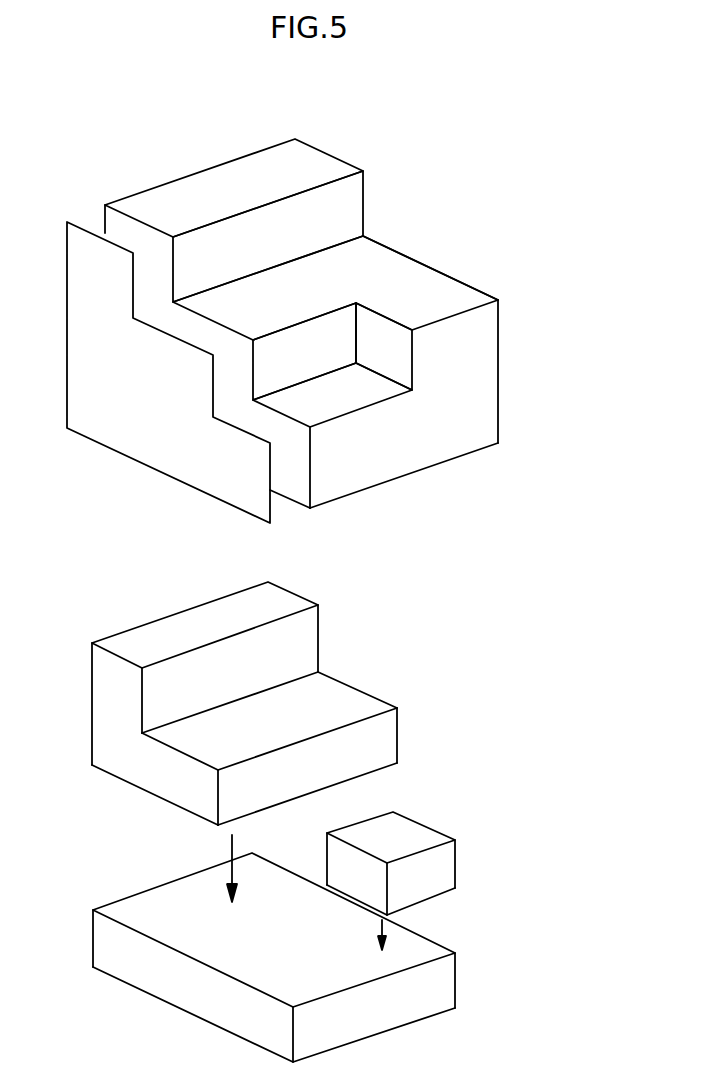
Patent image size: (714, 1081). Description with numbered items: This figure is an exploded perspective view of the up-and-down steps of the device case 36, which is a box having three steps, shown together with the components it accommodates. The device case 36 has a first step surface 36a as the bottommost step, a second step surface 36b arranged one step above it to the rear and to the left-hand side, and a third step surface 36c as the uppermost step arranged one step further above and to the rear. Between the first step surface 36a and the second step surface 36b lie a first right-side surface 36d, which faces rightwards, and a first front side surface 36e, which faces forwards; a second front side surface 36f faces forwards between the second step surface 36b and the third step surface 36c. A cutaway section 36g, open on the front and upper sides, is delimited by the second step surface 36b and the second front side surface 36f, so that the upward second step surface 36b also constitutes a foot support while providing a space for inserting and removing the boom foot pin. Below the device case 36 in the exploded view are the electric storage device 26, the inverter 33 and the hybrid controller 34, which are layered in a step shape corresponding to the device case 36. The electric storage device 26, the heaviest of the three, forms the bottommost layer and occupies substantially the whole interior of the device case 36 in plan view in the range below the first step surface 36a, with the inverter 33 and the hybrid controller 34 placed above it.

The device case 36 is at (498, 370).
The first step surface 36a is at (350, 398).
The second step surface 36b is at (388, 253).
The third step surface 36c is at (228, 172).
The first right-side surface 36d is at (392, 347).
The first front side surface 36e is at (333, 342).
The second front side surface 36f is at (340, 198).
The cutaway section 36g is at (455, 212).
The inverter 33 is at (92, 723).
The hybrid controller 34 is at (445, 877).
The electric storage device 26 is at (192, 985).